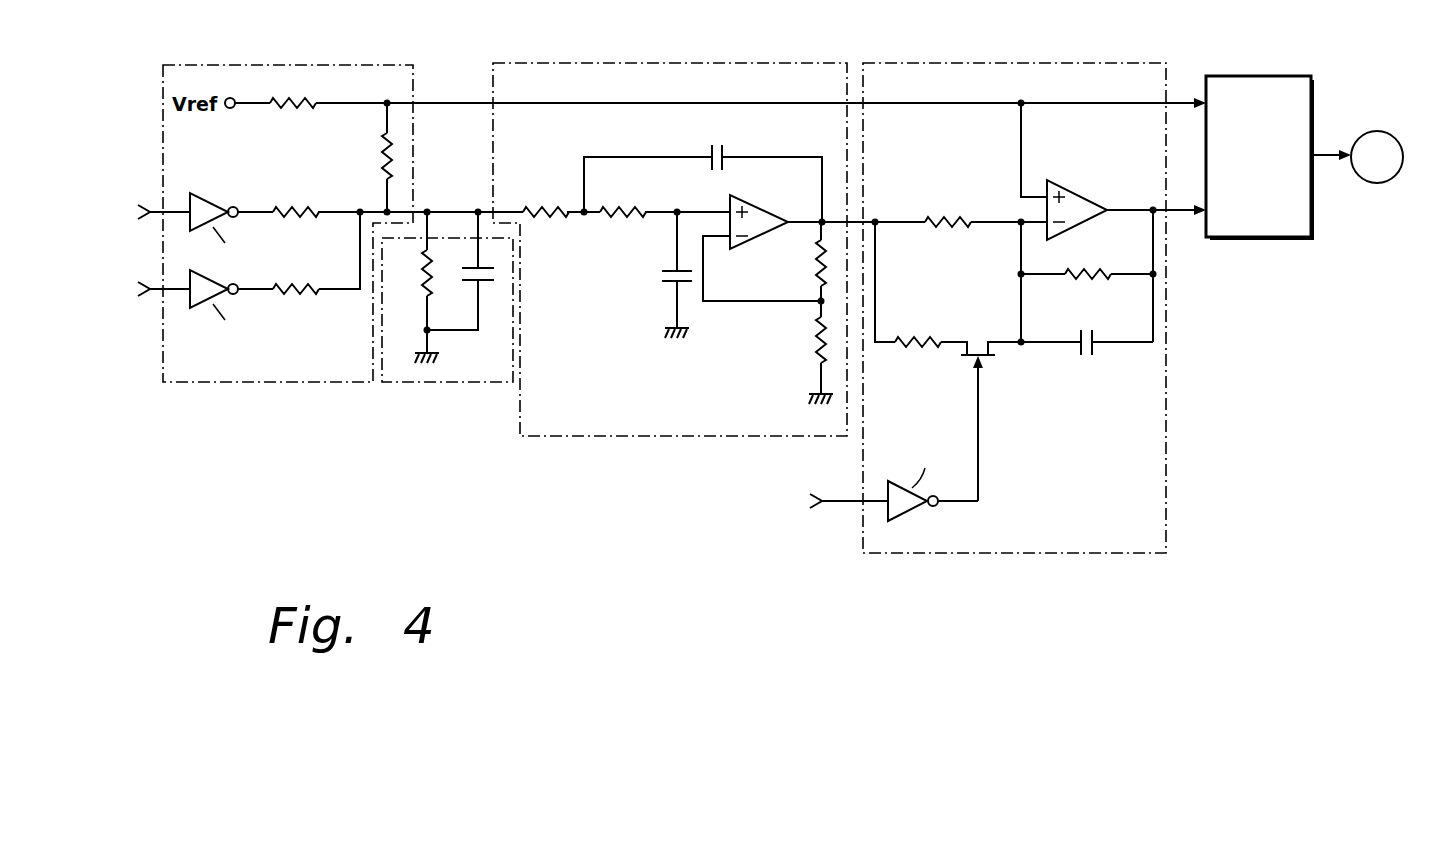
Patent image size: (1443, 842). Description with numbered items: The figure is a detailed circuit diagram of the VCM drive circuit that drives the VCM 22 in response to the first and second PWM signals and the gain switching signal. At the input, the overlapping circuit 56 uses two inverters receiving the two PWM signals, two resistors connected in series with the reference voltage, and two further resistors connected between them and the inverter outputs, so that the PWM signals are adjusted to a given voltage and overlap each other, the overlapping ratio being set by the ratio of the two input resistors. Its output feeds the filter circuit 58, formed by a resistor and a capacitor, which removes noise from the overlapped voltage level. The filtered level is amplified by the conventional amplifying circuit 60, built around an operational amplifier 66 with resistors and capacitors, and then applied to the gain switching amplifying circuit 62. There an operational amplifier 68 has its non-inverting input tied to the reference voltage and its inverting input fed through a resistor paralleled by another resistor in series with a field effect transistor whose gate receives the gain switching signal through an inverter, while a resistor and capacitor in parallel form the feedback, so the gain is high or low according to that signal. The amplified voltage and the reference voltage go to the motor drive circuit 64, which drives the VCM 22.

The VCM 22 is at (1397, 131).
The overlapping circuit 56 is at (289, 64).
The filter circuit 58 is at (448, 383).
The conventional amplifying circuit 60 is at (669, 63).
The gain switching amplifying circuit 62 is at (1012, 63).
The motor drive circuit 64 is at (1257, 76).
The operational amplifier 66 is at (762, 208).
The operational amplifier 68 is at (1073, 196).